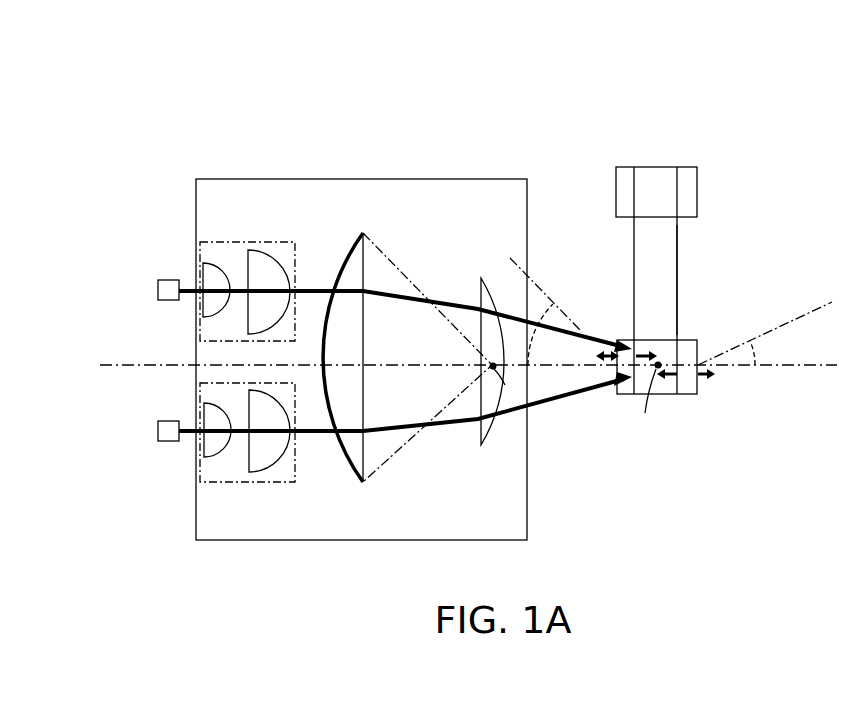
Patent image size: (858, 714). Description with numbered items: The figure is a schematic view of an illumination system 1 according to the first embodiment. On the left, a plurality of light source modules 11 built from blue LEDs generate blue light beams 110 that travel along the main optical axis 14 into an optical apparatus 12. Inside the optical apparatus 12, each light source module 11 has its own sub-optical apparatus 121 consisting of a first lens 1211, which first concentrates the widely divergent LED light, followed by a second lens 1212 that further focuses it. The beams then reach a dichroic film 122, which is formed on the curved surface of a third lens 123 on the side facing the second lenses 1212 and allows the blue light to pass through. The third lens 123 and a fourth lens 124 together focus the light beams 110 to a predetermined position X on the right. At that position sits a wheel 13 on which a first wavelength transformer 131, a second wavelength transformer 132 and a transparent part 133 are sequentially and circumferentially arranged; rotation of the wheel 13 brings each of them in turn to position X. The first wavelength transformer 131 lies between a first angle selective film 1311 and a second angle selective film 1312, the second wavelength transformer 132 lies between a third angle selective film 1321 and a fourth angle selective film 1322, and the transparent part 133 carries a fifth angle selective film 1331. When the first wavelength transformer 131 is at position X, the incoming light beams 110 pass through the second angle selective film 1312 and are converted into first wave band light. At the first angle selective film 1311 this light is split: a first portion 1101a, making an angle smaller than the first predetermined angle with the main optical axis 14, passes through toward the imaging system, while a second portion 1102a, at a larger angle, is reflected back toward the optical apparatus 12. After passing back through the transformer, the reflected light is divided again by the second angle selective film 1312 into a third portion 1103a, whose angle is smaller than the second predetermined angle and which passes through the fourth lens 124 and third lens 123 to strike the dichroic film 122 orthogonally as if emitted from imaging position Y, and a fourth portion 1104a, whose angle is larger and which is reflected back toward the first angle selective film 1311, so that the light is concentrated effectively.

The illumination system 1 is at (366, 74).
The light source module 11 is at (170, 279).
The light beam 110 is at (186, 297).
The optical apparatus 12 is at (207, 177).
The sub-optical apparatus 121 is at (266, 363).
The first lens 1211 is at (214, 270).
The second lens 1212 is at (260, 262).
The dichroic film 122 is at (452, 335).
The third lens 123 is at (352, 350).
The fourth lens 124 is at (476, 433).
The wheel 13 is at (690, 291).
The first wavelength transformer 131 is at (666, 419).
The first angle selective film 1311 is at (687, 396).
The second angle selective film 1312 is at (624, 393).
The second wavelength transformer 132 is at (659, 150).
The third angle selective film 1321 is at (690, 176).
The fourth angle selective film 1322 is at (623, 176).
The transparent part 133 is at (714, 278).
The fifth angle selective film 1331 is at (690, 250).
The main optical axis 14 is at (118, 363).
The first portion of the first wave band light 1101a is at (712, 377).
The second portion of the first wave band light 1102a is at (673, 348).
The third portion of the first wave band light 1103a is at (613, 346).
The fourth portion of the first wave band light 1104a is at (637, 342).